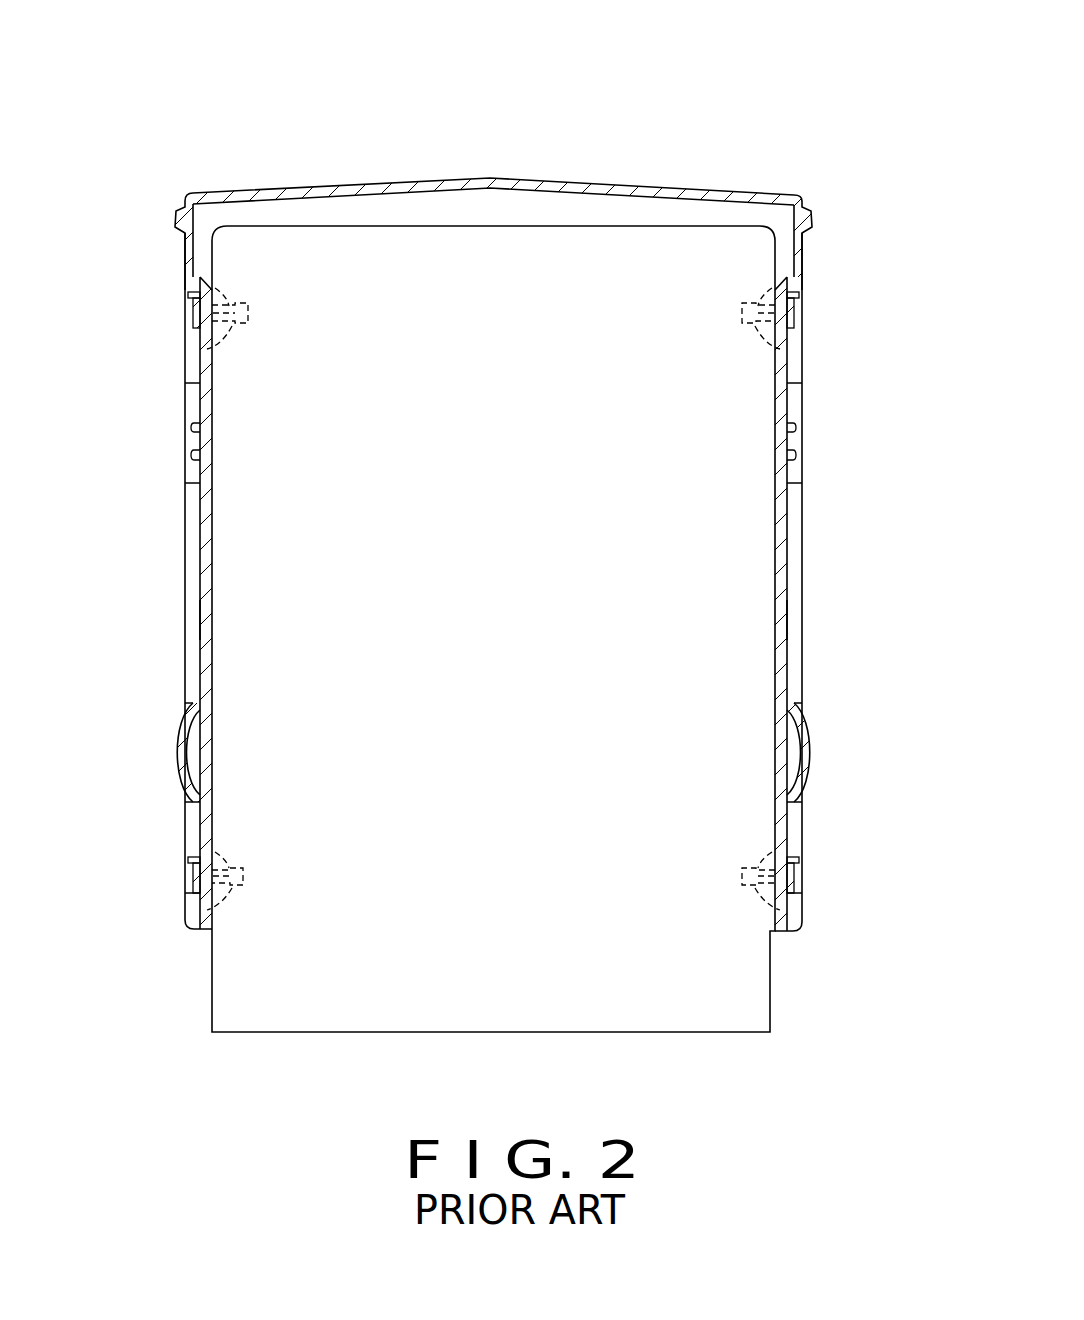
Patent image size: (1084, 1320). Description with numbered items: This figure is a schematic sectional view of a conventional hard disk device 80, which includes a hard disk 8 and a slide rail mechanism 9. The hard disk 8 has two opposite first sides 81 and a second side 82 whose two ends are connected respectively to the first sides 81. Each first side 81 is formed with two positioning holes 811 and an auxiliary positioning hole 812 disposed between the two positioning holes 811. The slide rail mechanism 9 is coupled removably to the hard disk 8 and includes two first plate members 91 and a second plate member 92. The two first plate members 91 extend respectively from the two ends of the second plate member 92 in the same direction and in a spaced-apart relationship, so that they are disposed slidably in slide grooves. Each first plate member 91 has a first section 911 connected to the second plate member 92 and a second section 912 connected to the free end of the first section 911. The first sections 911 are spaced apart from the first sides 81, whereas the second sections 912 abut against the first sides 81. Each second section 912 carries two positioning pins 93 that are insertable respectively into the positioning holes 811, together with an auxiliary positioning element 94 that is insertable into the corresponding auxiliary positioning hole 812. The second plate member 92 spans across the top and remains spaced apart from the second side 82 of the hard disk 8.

The hard disk device 80 is at (723, 133).
The slide rail mechanism 9 is at (643, 163).
The second plate member 92 is at (567, 185).
The first plate member 91 is at (191, 667).
The first section 911 is at (803, 257).
The second section 912 is at (793, 494).
The auxiliary positioning element 94 is at (781, 672).
The hard disk 8 is at (333, 1047).
The second side 82 is at (462, 226).
The first side 81 is at (212, 540).
The positioning hole 811 is at (788, 349).
The auxiliary positioning hole 812 is at (781, 607).
The positioning pin 93 is at (783, 290).